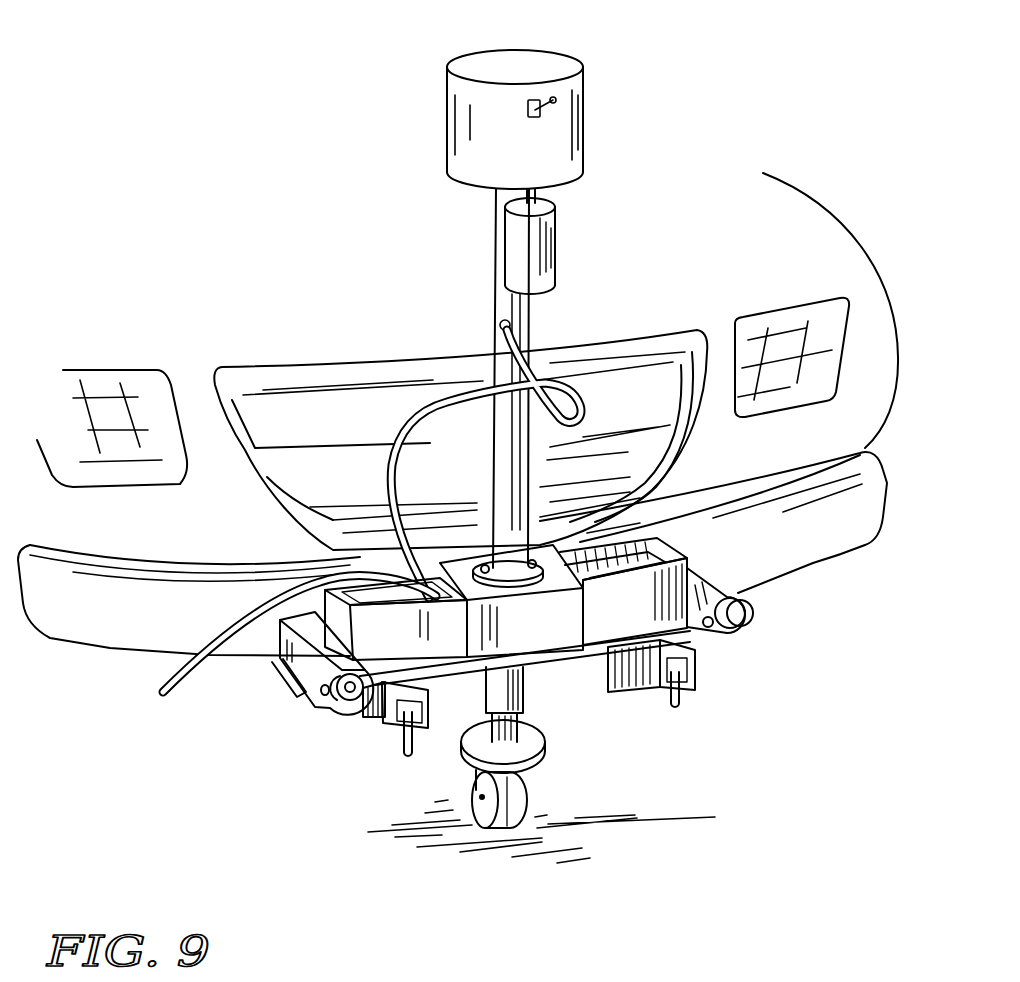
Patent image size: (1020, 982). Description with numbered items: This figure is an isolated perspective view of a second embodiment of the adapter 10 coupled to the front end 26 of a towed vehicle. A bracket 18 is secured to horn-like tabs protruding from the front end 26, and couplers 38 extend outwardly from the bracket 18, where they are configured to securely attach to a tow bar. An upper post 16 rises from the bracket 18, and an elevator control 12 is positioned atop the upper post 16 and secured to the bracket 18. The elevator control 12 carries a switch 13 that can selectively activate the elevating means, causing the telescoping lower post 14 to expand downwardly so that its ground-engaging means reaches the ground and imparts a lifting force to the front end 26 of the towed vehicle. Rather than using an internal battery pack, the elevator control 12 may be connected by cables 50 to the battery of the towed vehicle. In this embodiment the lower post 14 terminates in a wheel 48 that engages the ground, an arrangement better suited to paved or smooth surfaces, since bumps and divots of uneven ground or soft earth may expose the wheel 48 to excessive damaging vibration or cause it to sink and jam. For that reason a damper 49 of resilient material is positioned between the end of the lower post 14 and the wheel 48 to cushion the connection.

The adapter 10 is at (733, 113).
The elevator control 12 is at (572, 133).
The switch 13 is at (560, 99).
The lower post 14 is at (495, 690).
The upper post 16 is at (499, 300).
The bracket 18 is at (682, 538).
The front end 26 is at (860, 218).
The couplers 38 is at (782, 610).
The wheel 48 is at (518, 798).
The damper 49 is at (537, 742).
The cables 50 is at (547, 398).